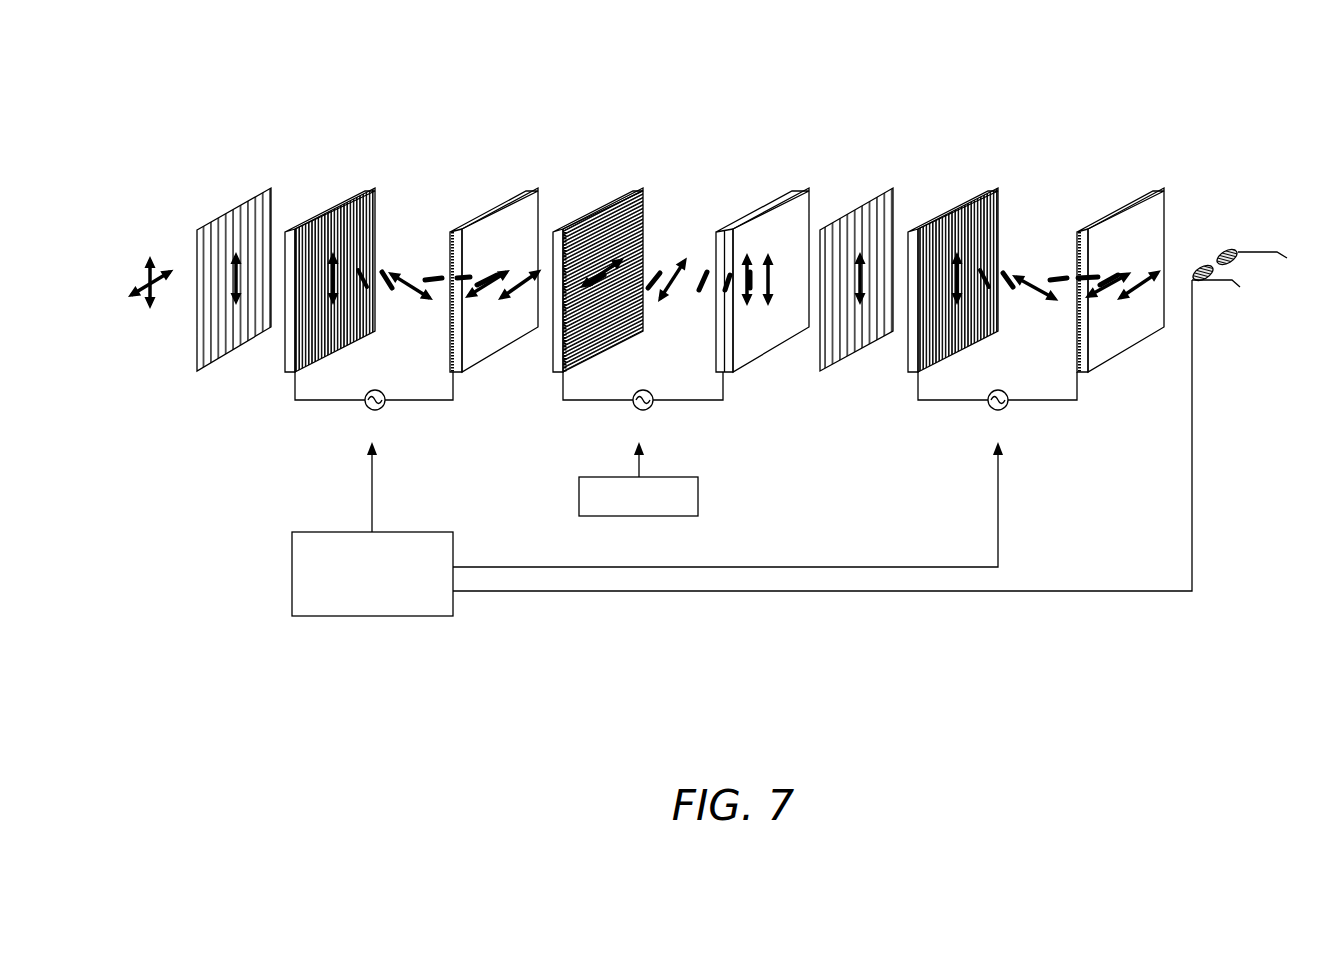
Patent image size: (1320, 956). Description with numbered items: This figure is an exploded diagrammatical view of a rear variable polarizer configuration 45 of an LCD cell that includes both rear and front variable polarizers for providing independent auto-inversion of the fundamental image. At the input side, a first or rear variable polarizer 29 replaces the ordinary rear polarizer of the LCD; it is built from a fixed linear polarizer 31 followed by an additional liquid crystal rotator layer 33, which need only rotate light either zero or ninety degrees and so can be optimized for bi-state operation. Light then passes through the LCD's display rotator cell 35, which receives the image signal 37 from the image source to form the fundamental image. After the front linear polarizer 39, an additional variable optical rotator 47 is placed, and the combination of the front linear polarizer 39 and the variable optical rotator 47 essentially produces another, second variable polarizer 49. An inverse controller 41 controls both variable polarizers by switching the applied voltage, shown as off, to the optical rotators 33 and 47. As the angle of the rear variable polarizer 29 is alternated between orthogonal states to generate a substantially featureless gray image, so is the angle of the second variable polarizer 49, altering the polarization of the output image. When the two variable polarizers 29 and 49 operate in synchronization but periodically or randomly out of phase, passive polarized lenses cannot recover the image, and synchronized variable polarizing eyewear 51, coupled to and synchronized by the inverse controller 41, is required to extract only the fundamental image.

The variable polarizer 29 is at (265, 129).
The fixed linear polarizer 31 is at (220, 218).
The liquid crystal rotator layer 33 is at (353, 176).
The display rotator cell 35 is at (620, 177).
The image signal 37 is at (698, 507).
The front linear polarizer 39 is at (892, 190).
The inverse controller 41 is at (453, 606).
The rear variable polarizer configuration 45 is at (772, 103).
The variable optical rotator 47 is at (977, 172).
The variable polarizer 49 is at (888, 127).
The synchronized variable polarizing eyewear 51 is at (1247, 252).